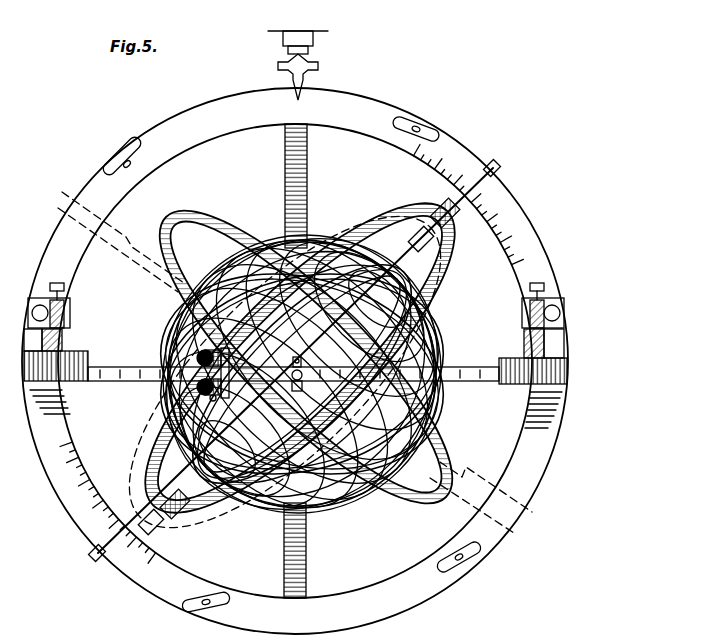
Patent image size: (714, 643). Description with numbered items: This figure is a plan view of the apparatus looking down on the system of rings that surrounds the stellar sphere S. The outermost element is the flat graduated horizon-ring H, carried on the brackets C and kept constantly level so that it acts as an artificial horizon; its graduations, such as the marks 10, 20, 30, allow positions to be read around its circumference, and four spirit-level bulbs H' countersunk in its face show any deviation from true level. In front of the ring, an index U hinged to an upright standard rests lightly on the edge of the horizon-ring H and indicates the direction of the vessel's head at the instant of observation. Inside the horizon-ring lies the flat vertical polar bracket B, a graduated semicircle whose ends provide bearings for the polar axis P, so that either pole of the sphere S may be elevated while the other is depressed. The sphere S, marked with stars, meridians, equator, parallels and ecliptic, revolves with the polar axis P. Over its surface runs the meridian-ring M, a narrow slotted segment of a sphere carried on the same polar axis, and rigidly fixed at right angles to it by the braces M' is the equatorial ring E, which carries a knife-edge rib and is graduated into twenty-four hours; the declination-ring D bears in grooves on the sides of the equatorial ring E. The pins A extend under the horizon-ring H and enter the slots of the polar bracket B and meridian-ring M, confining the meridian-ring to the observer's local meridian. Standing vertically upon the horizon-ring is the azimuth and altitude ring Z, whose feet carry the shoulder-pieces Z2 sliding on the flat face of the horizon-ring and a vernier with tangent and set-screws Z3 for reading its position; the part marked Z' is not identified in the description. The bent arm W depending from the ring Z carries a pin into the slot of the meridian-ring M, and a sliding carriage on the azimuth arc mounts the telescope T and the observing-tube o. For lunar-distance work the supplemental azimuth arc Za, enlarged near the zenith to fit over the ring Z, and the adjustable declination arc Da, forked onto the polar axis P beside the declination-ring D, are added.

The index U is at (312, 62).
The graduated horizon-ring H is at (173, 374).
The spirit-level bulbs H' is at (436, 339).
The brackets C is at (307, 170).
The azimuth and altitude ring Z is at (295, 379).
The clamp Z' is at (55, 340).
The shoulder-pieces Z2 is at (560, 348).
The vernier-scale with tangent and set-screws Z3 is at (62, 322).
The supplemental azimuth arc Za is at (126, 260).
The adjustable declination arc Da is at (165, 345).
The sphere S is at (262, 240).
The declination-ring D is at (301, 373).
The meridian-ring M is at (302, 374).
The braces M' is at (302, 374).
The observing-tube o is at (214, 405).
The equatorial ring E is at (178, 226).
The polar bracket B is at (452, 222).
The polar axis P is at (418, 236).
The pins A is at (498, 170).
The telescope T is at (196, 348).
The bent arm W is at (305, 368).
The scale graduation 10 is at (310, 358).
The scale graduation 20 is at (309, 356).
The scale graduation 30 is at (307, 427).